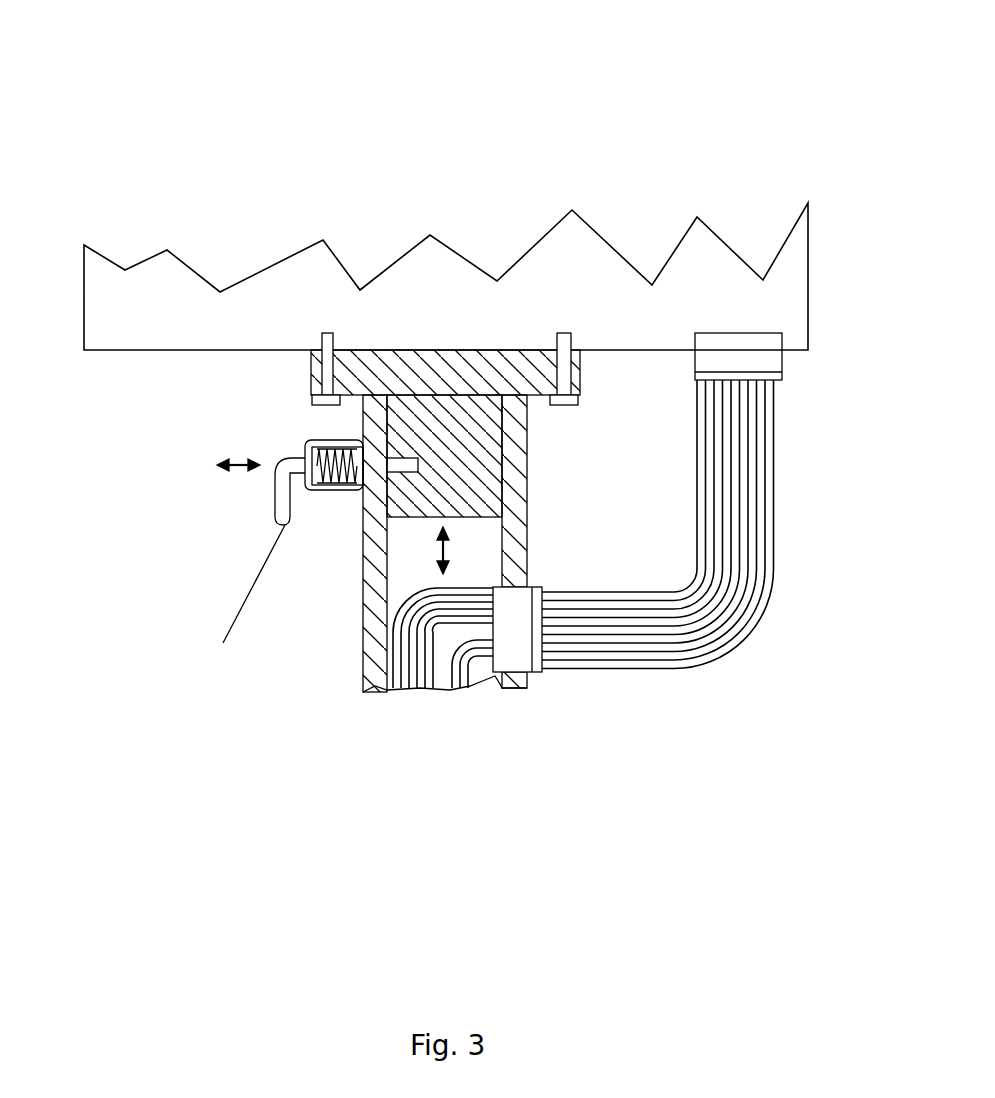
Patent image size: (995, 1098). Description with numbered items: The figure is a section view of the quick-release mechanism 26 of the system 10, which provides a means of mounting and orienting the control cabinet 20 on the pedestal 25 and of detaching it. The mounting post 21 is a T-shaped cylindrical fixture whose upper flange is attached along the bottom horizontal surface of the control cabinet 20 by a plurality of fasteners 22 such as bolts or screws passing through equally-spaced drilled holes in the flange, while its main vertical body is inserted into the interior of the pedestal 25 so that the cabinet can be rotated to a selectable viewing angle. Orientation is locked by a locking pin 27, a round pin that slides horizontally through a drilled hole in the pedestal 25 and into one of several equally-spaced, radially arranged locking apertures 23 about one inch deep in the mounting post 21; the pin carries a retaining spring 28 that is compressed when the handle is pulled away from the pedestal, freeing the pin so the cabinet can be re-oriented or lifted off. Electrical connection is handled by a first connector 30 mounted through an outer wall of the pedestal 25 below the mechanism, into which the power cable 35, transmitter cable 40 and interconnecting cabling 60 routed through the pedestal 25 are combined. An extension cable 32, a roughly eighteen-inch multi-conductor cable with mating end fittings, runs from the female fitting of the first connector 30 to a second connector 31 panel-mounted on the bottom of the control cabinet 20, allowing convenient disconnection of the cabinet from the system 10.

The system 10 is at (655, 126).
The control cabinet 20 is at (170, 318).
The mounting post 21 is at (493, 427).
The fasteners 22 is at (312, 399).
The locking apertures 23 is at (412, 465).
The pedestal 25 is at (523, 543).
The quick-release mechanism 26 is at (198, 515).
The locking pin 27 is at (367, 537).
The retaining spring 28 is at (308, 483).
The first connector 30 is at (518, 658).
The second connector 31 is at (760, 355).
The extension cable 32 is at (732, 380).
The power cable 35 is at (455, 690).
The transmitter cable 40 is at (472, 683).
The interconnecting cabling 60 is at (420, 690).